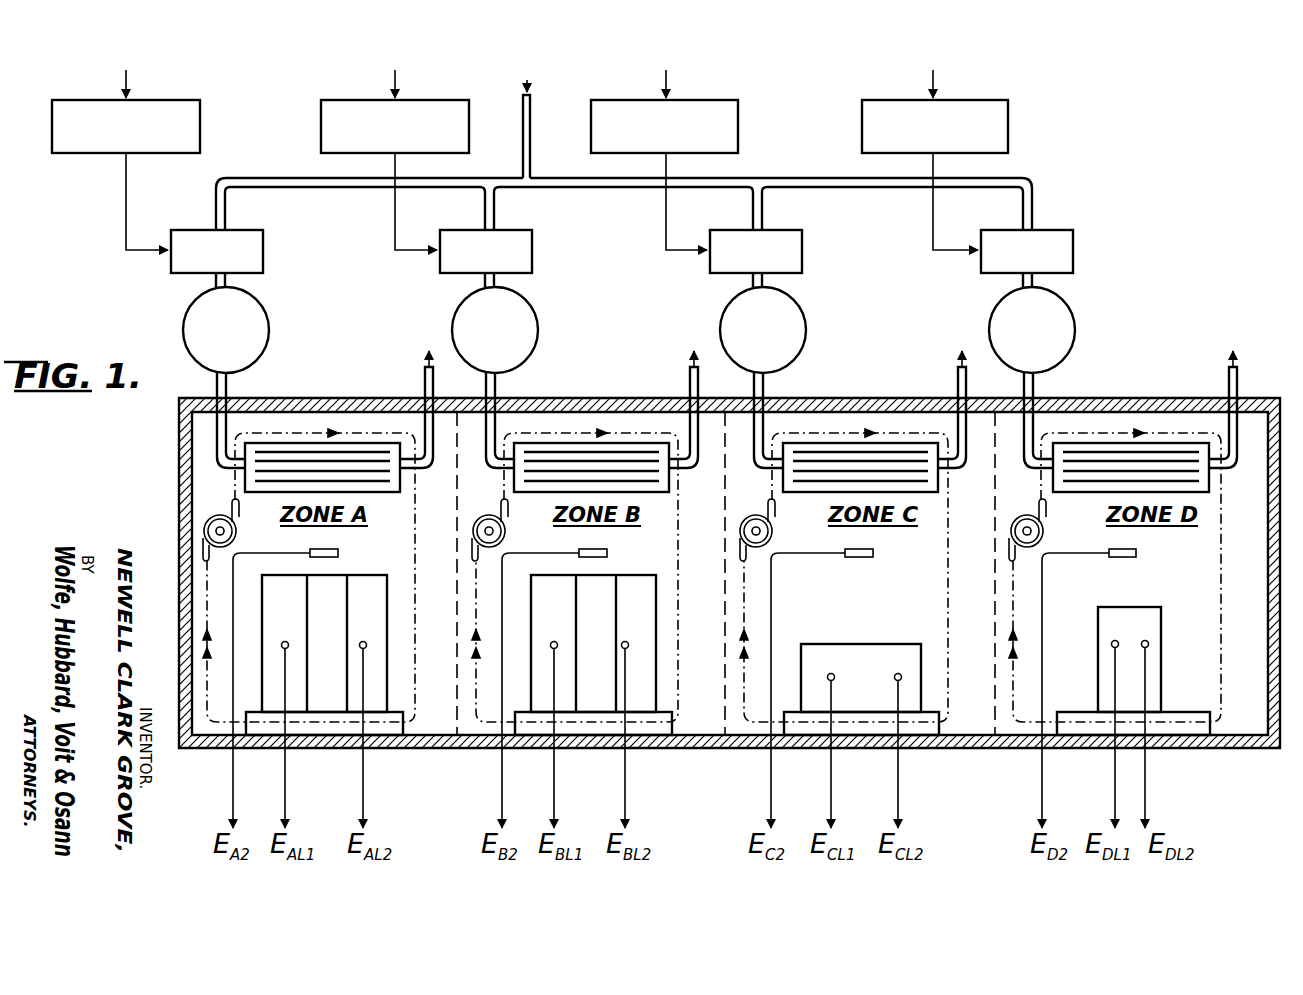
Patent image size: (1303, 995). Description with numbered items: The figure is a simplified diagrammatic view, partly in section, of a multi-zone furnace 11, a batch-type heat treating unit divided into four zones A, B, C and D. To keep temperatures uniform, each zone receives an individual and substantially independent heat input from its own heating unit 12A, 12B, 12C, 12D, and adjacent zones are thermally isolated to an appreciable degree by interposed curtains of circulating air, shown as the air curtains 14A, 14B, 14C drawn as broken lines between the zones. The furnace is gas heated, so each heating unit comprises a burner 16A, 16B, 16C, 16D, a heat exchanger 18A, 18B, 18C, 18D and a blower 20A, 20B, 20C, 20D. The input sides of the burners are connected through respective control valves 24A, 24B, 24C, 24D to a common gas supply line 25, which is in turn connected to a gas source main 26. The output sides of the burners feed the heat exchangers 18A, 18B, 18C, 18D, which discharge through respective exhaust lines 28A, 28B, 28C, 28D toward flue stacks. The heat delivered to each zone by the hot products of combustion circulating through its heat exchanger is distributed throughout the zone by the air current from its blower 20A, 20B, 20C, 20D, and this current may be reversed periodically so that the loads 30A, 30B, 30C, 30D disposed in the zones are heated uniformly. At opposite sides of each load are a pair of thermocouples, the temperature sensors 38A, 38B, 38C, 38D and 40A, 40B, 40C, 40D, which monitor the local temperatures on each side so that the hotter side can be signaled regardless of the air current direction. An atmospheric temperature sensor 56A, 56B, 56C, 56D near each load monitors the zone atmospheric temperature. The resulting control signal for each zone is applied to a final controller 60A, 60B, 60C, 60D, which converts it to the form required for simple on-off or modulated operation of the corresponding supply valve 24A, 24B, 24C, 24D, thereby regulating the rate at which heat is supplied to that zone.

The multi-zone furnace 11 is at (174, 489).
The heating unit 12A is at (288, 320).
The heating unit 12B is at (557, 320).
The heating unit 12C is at (825, 320).
The heating unit 12D is at (1094, 320).
The air curtain 14A is at (457, 698).
The air curtain 14B is at (725, 698).
The air curtain 14C is at (995, 698).
The burner 16A is at (190, 312).
The burner 16B is at (459, 312).
The burner 16C is at (728, 312).
The burner 16D is at (997, 312).
The heat exchanger 18A is at (293, 445).
The heat exchanger 18B is at (563, 445).
The heat exchanger 18C is at (831, 445).
The heat exchanger 18D is at (1101, 445).
The blower 20A is at (236, 533).
The blower 20B is at (505, 533).
The blower 20C is at (773, 533).
The blower 20D is at (1044, 533).
The control valve 24A is at (260, 232).
The control valve 24B is at (529, 232).
The control valve 24C is at (788, 232).
The control valve 24D is at (1063, 232).
The gas supply line 25 is at (583, 177).
The gas source main 26 is at (532, 116).
The exhaust line 28A is at (424, 386).
The exhaust line 28B is at (689, 386).
The exhaust line 28C is at (957, 386).
The exhaust line 28D is at (1228, 386).
The load 30A is at (381, 576).
The load 30B is at (650, 576).
The load 30C is at (856, 644).
The load 30D is at (1140, 607).
The temperature sensor 38A is at (285, 641).
The temperature sensor 38B is at (554, 641).
The temperature sensor 38C is at (831, 673).
The temperature sensor 38D is at (1112, 641).
The temperature sensor 40A is at (363, 641).
The temperature sensor 40B is at (625, 641).
The temperature sensor 40C is at (902, 674).
The temperature sensor 40D is at (1148, 641).
The atmospheric temperature sensor 56A is at (338, 553).
The atmospheric temperature sensor 56B is at (607, 553).
The atmospheric temperature sensor 56C is at (873, 553).
The atmospheric temperature sensor 56D is at (1136, 553).
The final controller 60A is at (72, 100).
The final controller 60B is at (341, 100).
The final controller 60C is at (716, 100).
The final controller 60D is at (988, 100).